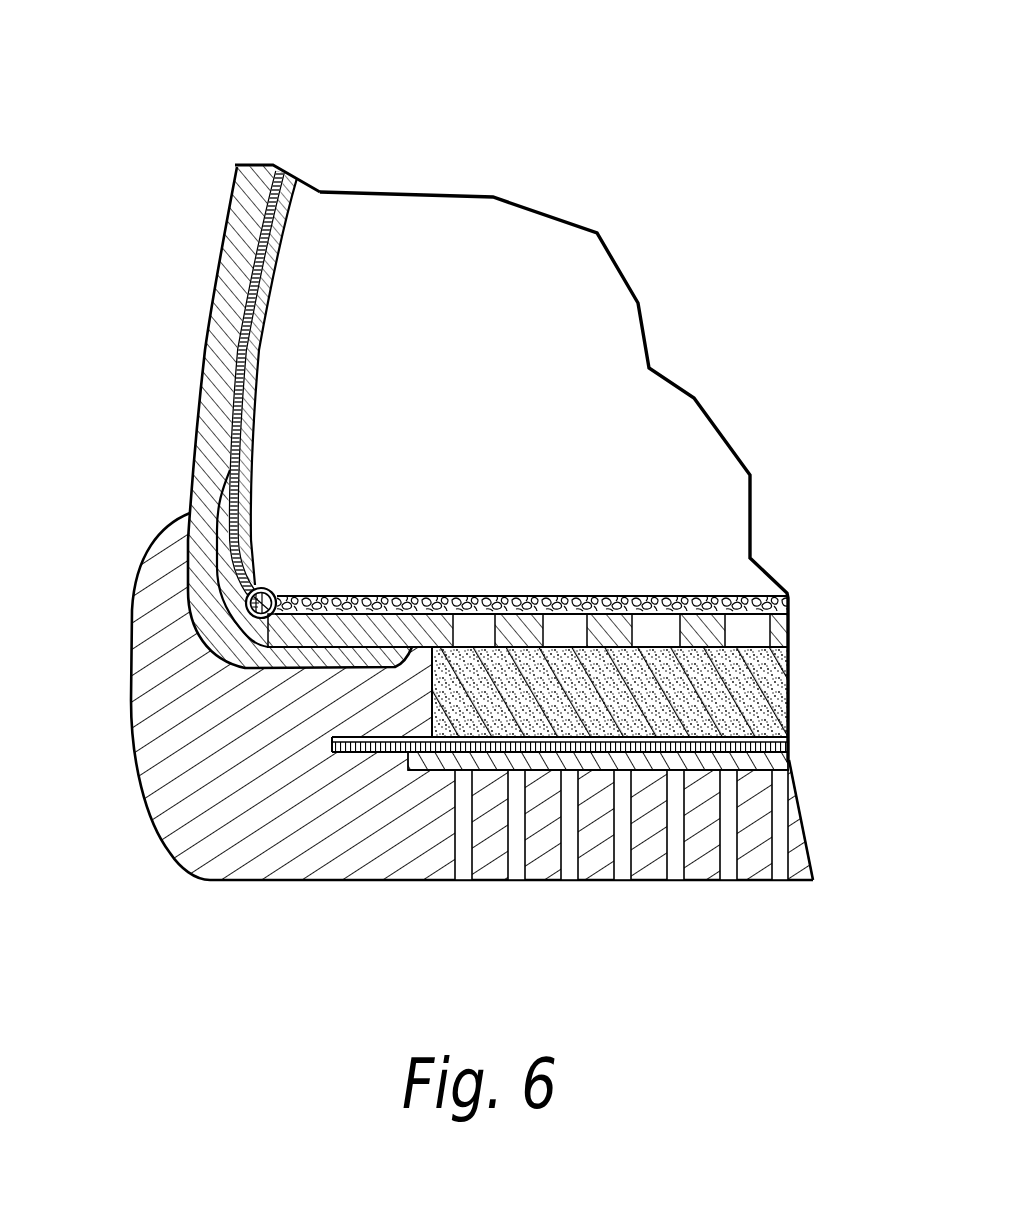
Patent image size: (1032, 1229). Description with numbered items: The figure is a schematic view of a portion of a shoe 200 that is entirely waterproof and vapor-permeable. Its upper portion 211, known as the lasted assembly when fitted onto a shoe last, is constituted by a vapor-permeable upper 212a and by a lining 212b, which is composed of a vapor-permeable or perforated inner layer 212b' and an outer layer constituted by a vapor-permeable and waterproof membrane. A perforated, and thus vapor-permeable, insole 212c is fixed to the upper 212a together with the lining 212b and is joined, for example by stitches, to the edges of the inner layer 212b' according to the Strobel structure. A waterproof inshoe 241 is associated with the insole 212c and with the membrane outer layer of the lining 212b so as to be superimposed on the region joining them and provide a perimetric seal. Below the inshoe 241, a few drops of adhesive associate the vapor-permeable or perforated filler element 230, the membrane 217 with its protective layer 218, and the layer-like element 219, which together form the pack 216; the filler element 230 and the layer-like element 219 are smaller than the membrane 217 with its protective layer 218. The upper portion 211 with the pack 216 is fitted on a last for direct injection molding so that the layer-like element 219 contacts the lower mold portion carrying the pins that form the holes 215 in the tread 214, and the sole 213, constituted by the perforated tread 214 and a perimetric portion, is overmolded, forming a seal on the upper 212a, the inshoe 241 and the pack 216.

The shoe 200 is at (672, 212).
The upper portion 211 is at (190, 290).
The vapor-permeable upper 212a is at (243, 218).
The lining 212b is at (318, 296).
The inner layer 212b' is at (367, 358).
The insole 212c is at (712, 597).
The sole 213 is at (110, 710).
The tread 214 is at (388, 857).
The holes 215 is at (565, 868).
The pack 216 is at (296, 750).
The membrane 217 is at (790, 723).
The protective layer 218 is at (790, 748).
The layer-like element 219 is at (785, 765).
The filler element 230 is at (785, 674).
The inshoe 241 is at (285, 632).